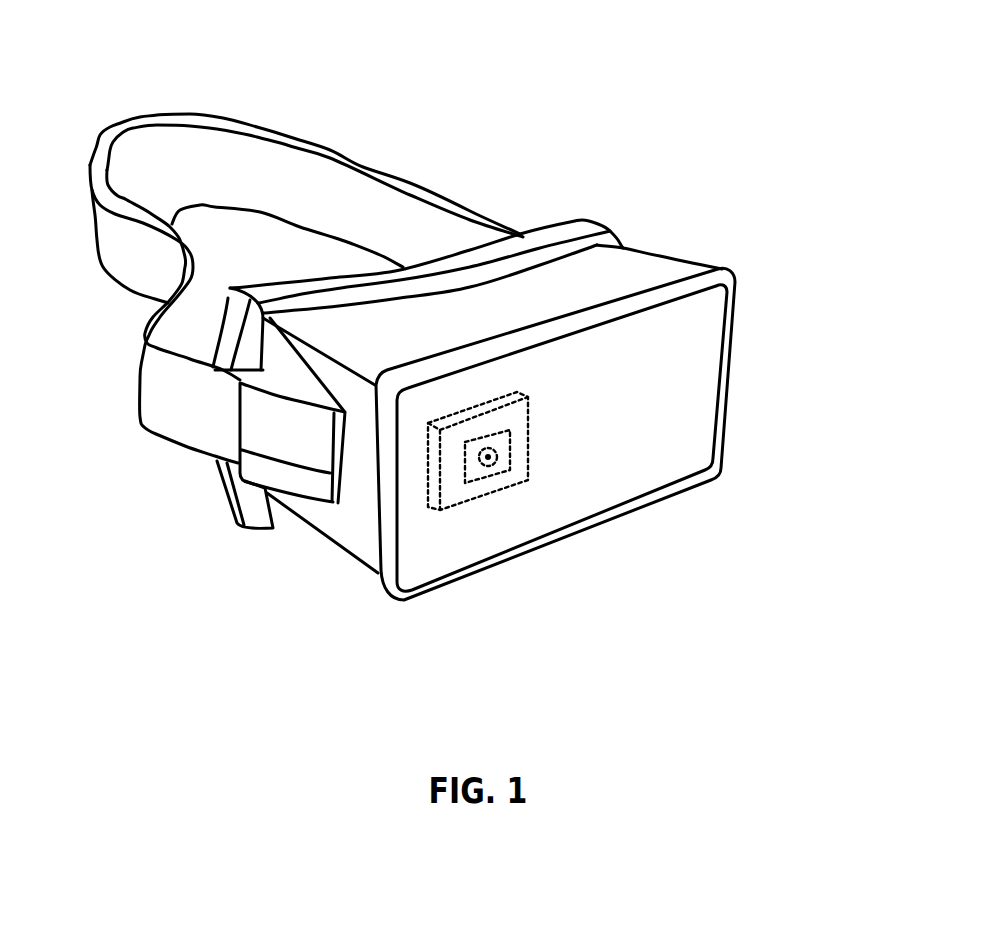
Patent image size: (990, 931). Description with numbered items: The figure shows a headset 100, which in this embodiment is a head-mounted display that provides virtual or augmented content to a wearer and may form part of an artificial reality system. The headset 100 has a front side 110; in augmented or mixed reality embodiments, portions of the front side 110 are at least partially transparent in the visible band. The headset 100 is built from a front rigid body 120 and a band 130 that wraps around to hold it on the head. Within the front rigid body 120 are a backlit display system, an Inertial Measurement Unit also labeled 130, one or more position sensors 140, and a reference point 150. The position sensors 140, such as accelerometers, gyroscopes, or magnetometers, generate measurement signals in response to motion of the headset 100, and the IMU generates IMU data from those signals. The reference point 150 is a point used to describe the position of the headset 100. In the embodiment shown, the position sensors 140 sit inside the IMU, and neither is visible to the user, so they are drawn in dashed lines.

The headset 100 is at (505, 36).
The front side 110 is at (697, 387).
The front rigid body 120 is at (728, 272).
The band 130 is at (420, 185).
The position sensors 140 is at (465, 458).
The reference point 150 is at (490, 462).